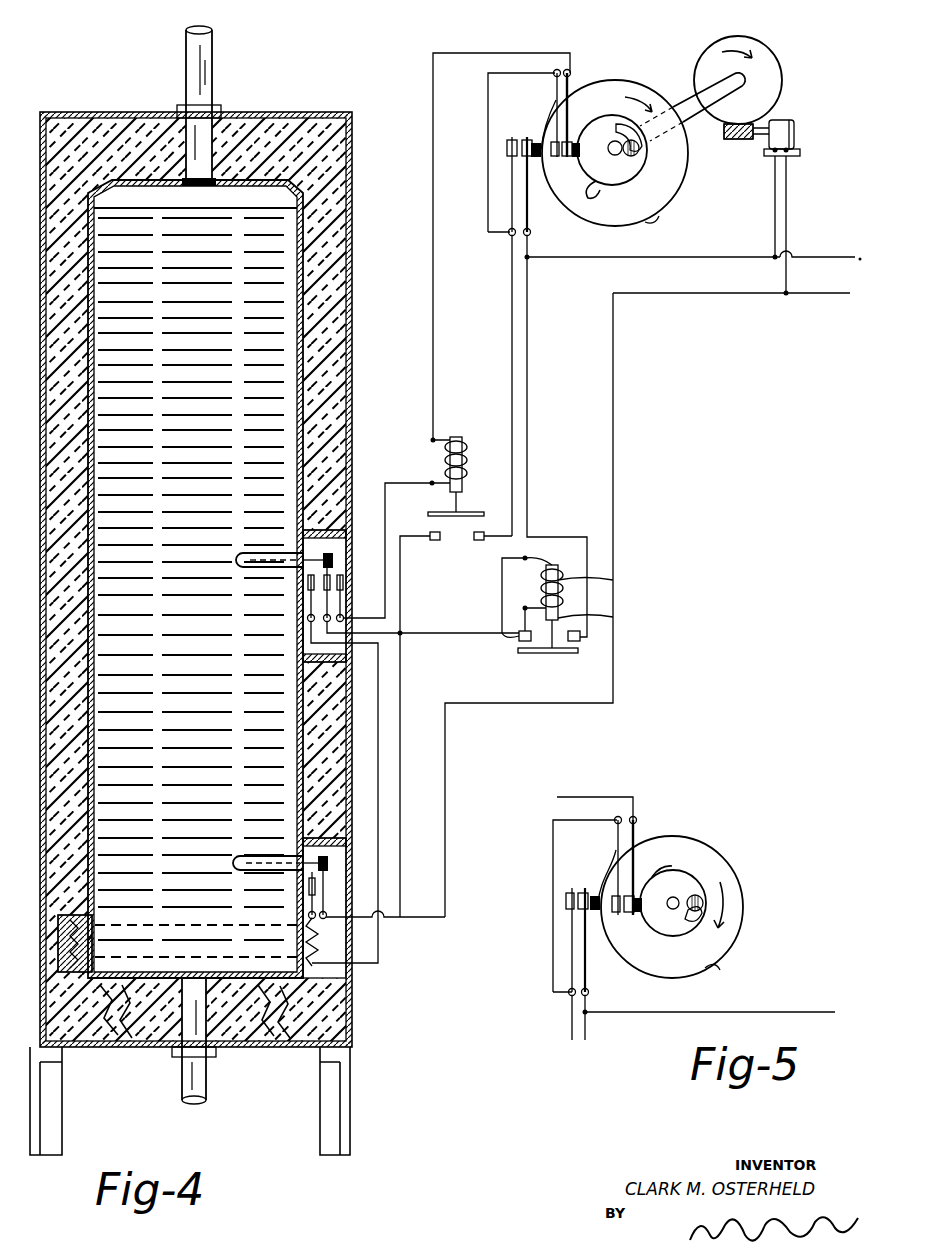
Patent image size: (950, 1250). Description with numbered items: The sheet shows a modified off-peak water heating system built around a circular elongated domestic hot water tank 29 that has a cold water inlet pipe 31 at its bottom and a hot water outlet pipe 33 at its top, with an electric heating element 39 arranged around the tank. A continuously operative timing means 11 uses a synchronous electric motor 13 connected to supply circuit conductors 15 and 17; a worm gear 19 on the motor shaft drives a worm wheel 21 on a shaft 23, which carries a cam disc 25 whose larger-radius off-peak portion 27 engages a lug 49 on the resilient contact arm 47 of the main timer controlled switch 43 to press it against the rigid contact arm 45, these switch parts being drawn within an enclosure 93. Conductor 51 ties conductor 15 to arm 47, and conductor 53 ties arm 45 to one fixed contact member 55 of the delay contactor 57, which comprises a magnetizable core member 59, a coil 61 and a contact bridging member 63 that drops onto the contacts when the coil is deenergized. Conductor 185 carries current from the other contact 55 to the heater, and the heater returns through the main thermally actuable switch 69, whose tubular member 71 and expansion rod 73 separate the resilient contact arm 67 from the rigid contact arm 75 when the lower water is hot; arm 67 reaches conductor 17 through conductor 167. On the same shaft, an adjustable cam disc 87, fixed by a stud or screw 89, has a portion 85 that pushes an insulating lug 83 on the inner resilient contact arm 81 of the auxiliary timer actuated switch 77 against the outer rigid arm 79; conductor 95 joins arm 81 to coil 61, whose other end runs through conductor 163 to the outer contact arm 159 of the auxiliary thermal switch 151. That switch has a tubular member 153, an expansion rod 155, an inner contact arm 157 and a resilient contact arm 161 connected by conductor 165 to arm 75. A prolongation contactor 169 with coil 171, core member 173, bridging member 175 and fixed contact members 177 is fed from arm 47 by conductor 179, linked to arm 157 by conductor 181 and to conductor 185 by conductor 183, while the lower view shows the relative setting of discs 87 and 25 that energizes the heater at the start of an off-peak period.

In FIG. 4, the continuously operative timing means 11 is at (670, 39).
In FIG. 4, the synchronous electric motor 13 is at (792, 120).
In FIG. 4, the supply circuit conductor 15 is at (812, 257).
In FIG. 5, the supply circuit conductor 15 is at (798, 1012).
In FIG. 4, the supply circuit conductor 17 is at (815, 294).
In FIG. 4, the worm gear 19 is at (738, 140).
In FIG. 4, the worm wheel 21 is at (765, 50).
In FIG. 4, the shaft 23 is at (678, 93).
In FIG. 4, the cam disc 25 is at (680, 182).
In FIG. 5, the cam disc 25 is at (744, 902).
In FIG. 4, the off-peak portion 27 is at (640, 225).
In FIG. 5, the off-peak portion 27 is at (682, 984).
In FIG. 4, the hot water tank 29 is at (300, 380).
In FIG. 4, the cold water inlet pipe 31 is at (208, 1082).
In FIG. 4, the hot water outlet pipe 33 is at (214, 70).
In FIG. 4, the electric heating element 39 is at (360, 963).
In FIG. 4, the main timer controlled switch 43 is at (525, 116).
In FIG. 5, the main timer controlled switch 43 is at (598, 866).
In FIG. 4, the relatively rigid contact arm 45 is at (512, 204).
In FIG. 5, the relatively rigid contact arm 45 is at (572, 961).
In FIG. 4, the resilient contact arm 47 is at (530, 226).
In FIG. 5, the resilient contact arm 47 is at (588, 989).
In FIG. 4, the lug 49 is at (530, 180).
In FIG. 5, the lug 49 is at (588, 946).
In FIG. 4, the conductor 51 is at (585, 259).
In FIG. 4, the conductor 53 is at (512, 318).
In FIG. 4, the fixed contact members 55 is at (433, 541).
In FIG. 4, the electromagnet switch or contactor 57 is at (466, 414).
In FIG. 4, the magnetizable core member 59 is at (462, 441).
In FIG. 4, the coil 61 is at (463, 462).
In FIG. 4, the contact bridging member 63 is at (467, 512).
In FIG. 4, the resilient contact arm 67 is at (318, 900).
In FIG. 4, the main thermally actuable heater control switch 69 is at (290, 843).
In FIG. 4, the tubular member 71 is at (248, 868).
In FIG. 4, the expansion rod 73 is at (322, 858).
In FIG. 4, the relatively rigid contact arm 75 is at (308, 908).
In FIG. 4, the auxiliary timer actuated switch 77 is at (567, 179).
In FIG. 5, the auxiliary timer actuated switch 77 is at (640, 948).
In FIG. 4, the outer relatively rigid contact arm 79 is at (556, 91).
In FIG. 5, the outer relatively rigid contact arm 79 is at (616, 846).
In FIG. 4, the inner resilient contact arm 81 is at (569, 82).
In FIG. 5, the inner resilient contact arm 81 is at (636, 828).
In FIG. 4, the lug 83 is at (578, 130).
In FIG. 4, the portion 85 is at (592, 186).
In FIG. 5, the portion 85 is at (672, 862).
In FIG. 4, the cam disc 87 is at (627, 181).
In FIG. 5, the cam disc 87 is at (700, 876).
In FIG. 4, the stud or screw 89 is at (640, 156).
In FIG. 4, the switch casing 93 is at (488, 110).
In FIG. 5, the switch casing 93 is at (553, 873).
In FIG. 4, the conductor 95 is at (480, 53).
In FIG. 5, the conductor 95 is at (587, 797).
In FIG. 4, the auxiliary thermal switch 151 is at (285, 529).
In FIG. 4, the tubular member 153 is at (252, 574).
In FIG. 4, the expansion rod 155 is at (328, 556).
In FIG. 4, the relatively rigid inner contact arm 157 is at (311, 606).
In FIG. 4, the relatively rigid outer contact arm 159 is at (348, 612).
In FIG. 4, the resilient contact arm 161 is at (343, 573).
In FIG. 4, the conductor 163 is at (395, 480).
In FIG. 4, the conductor 165 is at (380, 733).
In FIG. 4, the conductor 167 is at (614, 468).
In FIG. 4, the prolongation contactor 169 is at (588, 556).
In FIG. 4, the coil 171 is at (613, 580).
In FIG. 4, the magnetizable core member 173 is at (613, 617).
In FIG. 4, the contact bridging member 175 is at (556, 656).
In FIG. 4, the fixed contact members 177 is at (516, 645).
In FIG. 4, the conductor 179 is at (528, 432).
In FIG. 4, the conductor 181 is at (500, 587).
In FIG. 4, the conductor 183 is at (428, 640).
In FIG. 4, the conductor 185 is at (400, 612).